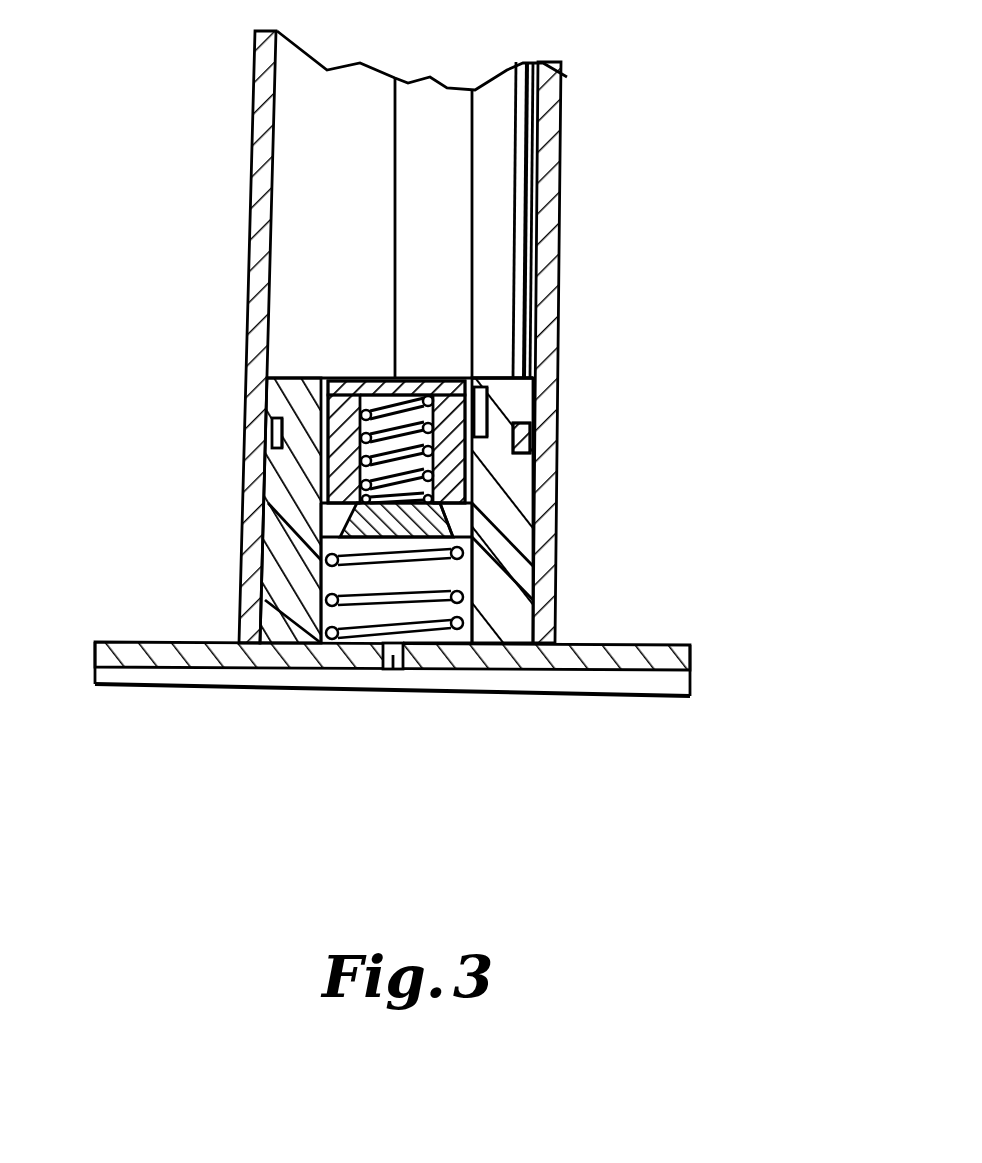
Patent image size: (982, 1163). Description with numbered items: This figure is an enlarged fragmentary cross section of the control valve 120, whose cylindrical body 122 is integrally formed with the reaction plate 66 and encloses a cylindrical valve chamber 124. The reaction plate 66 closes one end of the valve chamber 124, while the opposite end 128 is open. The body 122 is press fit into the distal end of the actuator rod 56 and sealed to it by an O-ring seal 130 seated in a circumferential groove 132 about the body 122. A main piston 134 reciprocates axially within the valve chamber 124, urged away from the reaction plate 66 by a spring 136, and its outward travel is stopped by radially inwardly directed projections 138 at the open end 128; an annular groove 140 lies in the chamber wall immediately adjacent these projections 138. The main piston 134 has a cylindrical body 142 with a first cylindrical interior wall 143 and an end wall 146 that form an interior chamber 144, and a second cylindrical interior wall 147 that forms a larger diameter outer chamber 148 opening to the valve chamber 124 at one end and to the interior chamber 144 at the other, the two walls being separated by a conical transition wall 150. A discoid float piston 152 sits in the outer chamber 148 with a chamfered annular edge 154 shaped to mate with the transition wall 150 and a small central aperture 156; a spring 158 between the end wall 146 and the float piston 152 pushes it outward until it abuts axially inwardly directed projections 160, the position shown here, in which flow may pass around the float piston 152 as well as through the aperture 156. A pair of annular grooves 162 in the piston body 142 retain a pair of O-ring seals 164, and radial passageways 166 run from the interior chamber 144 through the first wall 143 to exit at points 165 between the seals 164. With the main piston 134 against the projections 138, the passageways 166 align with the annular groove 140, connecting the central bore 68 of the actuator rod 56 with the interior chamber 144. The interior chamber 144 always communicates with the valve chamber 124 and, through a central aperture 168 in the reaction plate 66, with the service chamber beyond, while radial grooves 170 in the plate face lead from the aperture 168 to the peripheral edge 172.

The actuator rod 56 is at (548, 234).
The reaction plate 66 is at (690, 668).
The central bore 68 is at (500, 192).
The control valve 120 is at (333, 312).
The cylindrical body 122 is at (513, 613).
The valve chamber 124 is at (308, 682).
The open end 128 is at (412, 382).
The O-ring seal 130 is at (520, 447).
The circumferential groove 132 is at (523, 423).
The main piston 134 is at (300, 497).
The spring 136 is at (265, 645).
The radially inwardly directed projections 138 is at (480, 377).
The annular groove 140 is at (520, 405).
The cylindrical body 142 is at (330, 540).
The first cylindrical interior wall 143 is at (477, 497).
The interior chamber 144 is at (428, 385).
The end wall 146 is at (362, 382).
The second cylindrical interior wall 147 is at (500, 555).
The outer chamber 148 is at (513, 563).
The conical transition wall 150 is at (340, 515).
The float piston 152 is at (262, 578).
The chamfered annular edge 154 is at (510, 545).
The central aperture 156 is at (300, 615).
The spring 158 is at (477, 523).
The axially inwardly directed projections 160 is at (425, 648).
The annular grooves 162 is at (340, 385).
The O-ring seals 164 is at (275, 388).
The exit points 165 is at (300, 425).
The passageways 166 is at (300, 458).
The central aperture 168 is at (390, 672).
The radial grooves 170 is at (582, 697).
The peripheral edge 172 is at (95, 672).